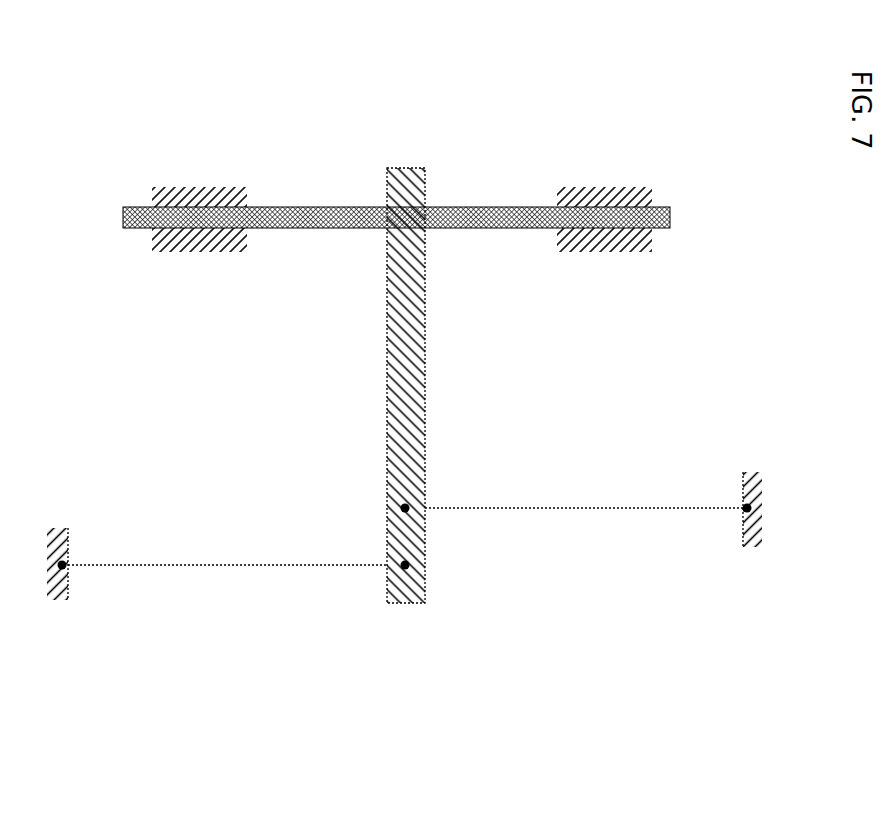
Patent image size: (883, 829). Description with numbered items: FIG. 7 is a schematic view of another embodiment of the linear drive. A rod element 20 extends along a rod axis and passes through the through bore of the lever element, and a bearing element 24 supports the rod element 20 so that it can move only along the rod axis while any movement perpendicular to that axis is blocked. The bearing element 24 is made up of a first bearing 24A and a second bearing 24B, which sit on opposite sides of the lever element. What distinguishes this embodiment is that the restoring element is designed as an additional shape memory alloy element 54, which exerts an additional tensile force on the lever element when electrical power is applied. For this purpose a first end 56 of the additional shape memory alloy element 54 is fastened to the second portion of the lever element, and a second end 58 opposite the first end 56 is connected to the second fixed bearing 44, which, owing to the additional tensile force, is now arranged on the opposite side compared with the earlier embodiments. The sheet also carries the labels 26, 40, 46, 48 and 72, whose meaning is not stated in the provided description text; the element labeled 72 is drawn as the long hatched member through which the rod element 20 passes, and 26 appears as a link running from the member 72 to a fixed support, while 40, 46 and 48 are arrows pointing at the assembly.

The rod element 20 is at (312, 205).
The bearing element 24 is at (396, 174).
The first bearing 24A is at (599, 190).
The second bearing 24B is at (207, 198).
The first link 26 is at (275, 566).
The linkage assembly 40 is at (652, 650).
The second fixed bearing 44 is at (758, 535).
The lower pivot joint 46 is at (446, 576).
The upper pivot region 48 is at (449, 489).
The additional shape memory alloy element 54 is at (508, 506).
The first end 56 is at (403, 506).
The second end 58 is at (732, 479).
The carriage / slide bar 72 is at (410, 603).